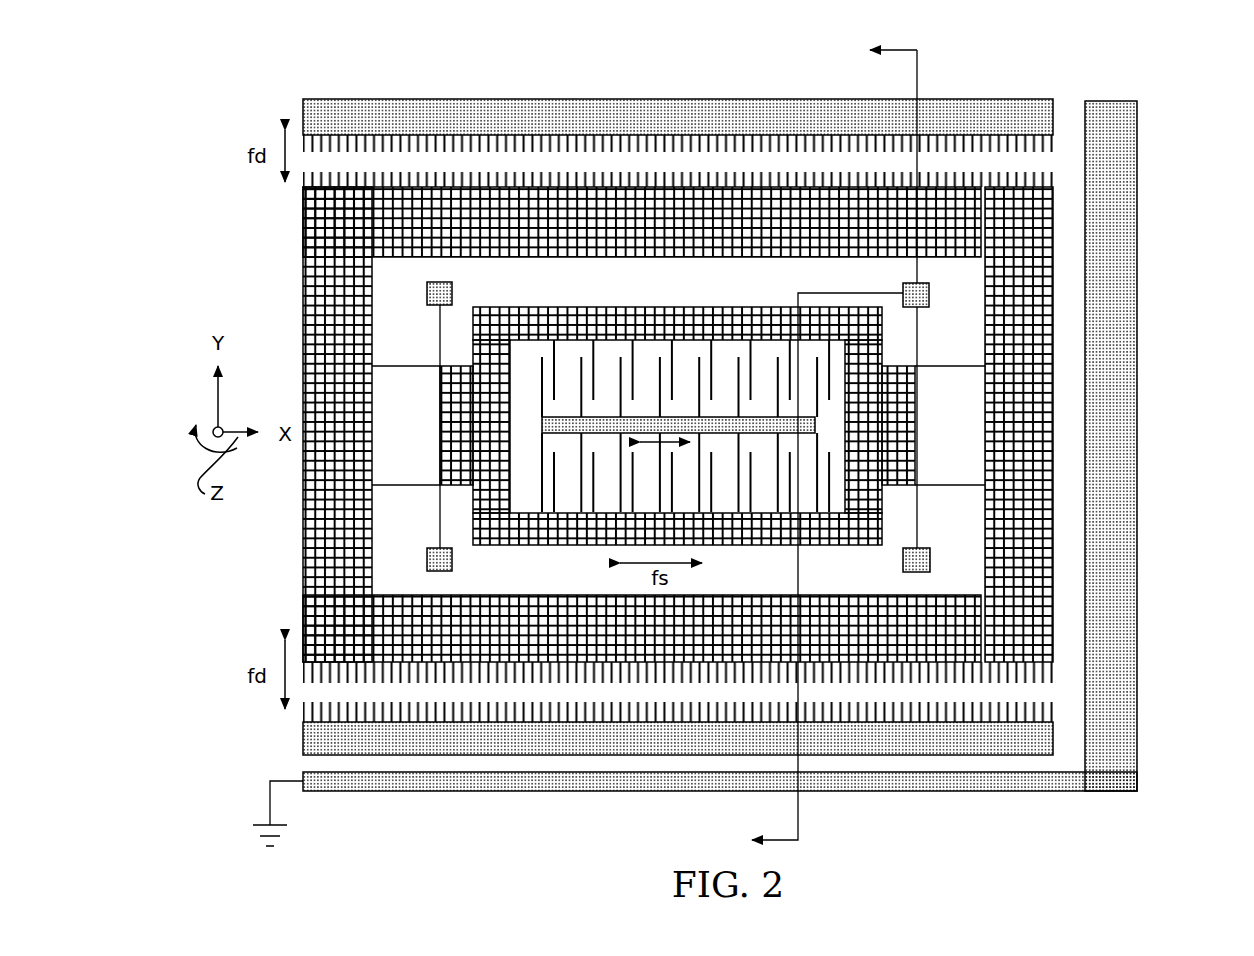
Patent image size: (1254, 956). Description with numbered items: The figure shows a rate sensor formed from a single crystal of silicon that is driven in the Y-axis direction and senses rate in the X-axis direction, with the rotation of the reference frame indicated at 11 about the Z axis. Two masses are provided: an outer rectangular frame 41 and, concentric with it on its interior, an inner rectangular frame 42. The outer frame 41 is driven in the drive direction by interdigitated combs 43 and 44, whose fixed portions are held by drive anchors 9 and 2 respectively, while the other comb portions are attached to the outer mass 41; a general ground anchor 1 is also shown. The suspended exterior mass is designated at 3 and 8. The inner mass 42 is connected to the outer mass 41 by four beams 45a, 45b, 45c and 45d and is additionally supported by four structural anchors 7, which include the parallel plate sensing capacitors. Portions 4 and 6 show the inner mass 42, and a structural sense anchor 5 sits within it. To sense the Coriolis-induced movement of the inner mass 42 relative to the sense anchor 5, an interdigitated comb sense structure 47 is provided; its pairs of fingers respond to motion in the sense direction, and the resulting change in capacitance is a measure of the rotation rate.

The ground anchor 1 is at (1138, 425).
The drive anchor 2 is at (920, 757).
The suspended exterior mass 3 is at (827, 566).
The inner mass portion 4 is at (677, 529).
The sense anchor 5 is at (808, 432).
The inner mass portion 6 is at (677, 323).
The structural anchor 7 is at (452, 293).
The suspended exterior mass 8 is at (914, 166).
The drive anchor 9 is at (968, 100).
The reference frame rotation 11 is at (768, 56).
The outer rectangular frame 41 is at (717, 440).
The inner rectangular frame 42 is at (677, 406).
The interdigitated drive comb 43 is at (1038, 158).
The interdigitated drive comb 44 is at (1037, 697).
The beam 45a is at (411, 366).
The beam 45b is at (945, 366).
The beam 45c is at (411, 485).
The beam 45d is at (945, 485).
The interdigitated comb sense structure 47 is at (633, 389).